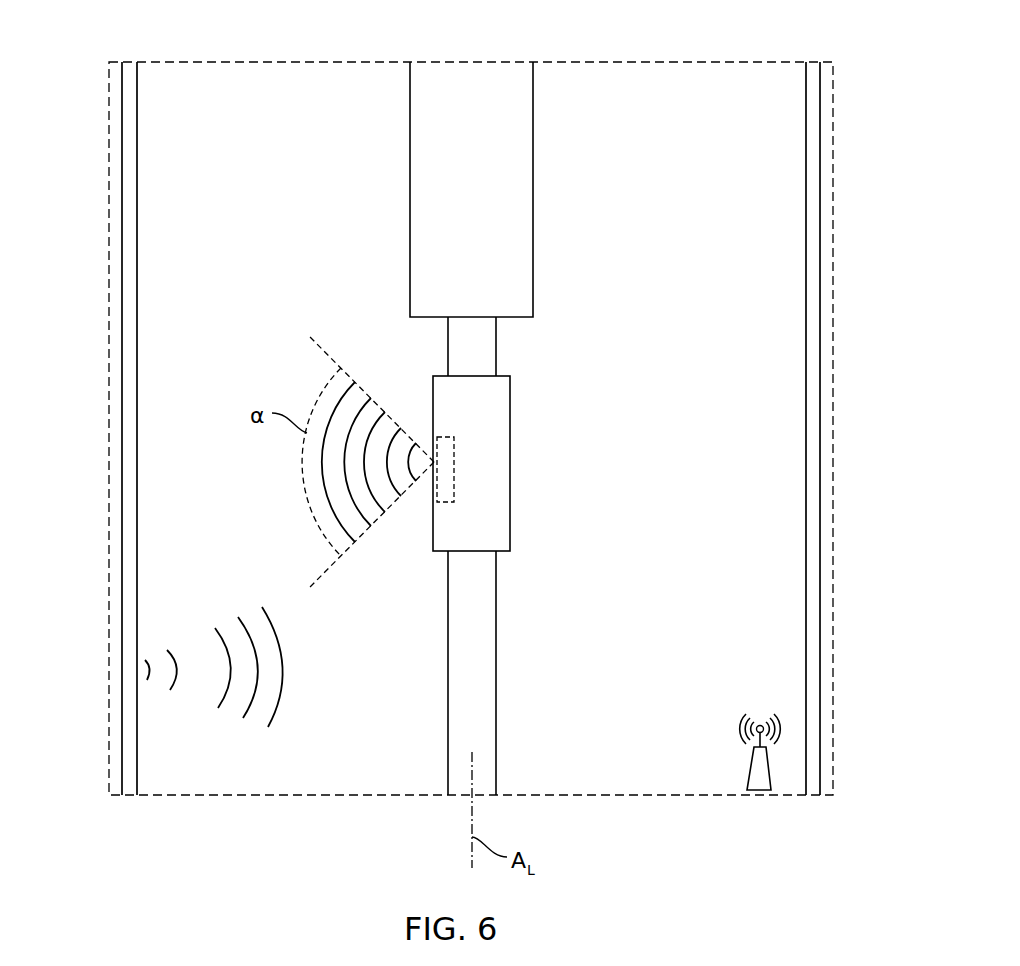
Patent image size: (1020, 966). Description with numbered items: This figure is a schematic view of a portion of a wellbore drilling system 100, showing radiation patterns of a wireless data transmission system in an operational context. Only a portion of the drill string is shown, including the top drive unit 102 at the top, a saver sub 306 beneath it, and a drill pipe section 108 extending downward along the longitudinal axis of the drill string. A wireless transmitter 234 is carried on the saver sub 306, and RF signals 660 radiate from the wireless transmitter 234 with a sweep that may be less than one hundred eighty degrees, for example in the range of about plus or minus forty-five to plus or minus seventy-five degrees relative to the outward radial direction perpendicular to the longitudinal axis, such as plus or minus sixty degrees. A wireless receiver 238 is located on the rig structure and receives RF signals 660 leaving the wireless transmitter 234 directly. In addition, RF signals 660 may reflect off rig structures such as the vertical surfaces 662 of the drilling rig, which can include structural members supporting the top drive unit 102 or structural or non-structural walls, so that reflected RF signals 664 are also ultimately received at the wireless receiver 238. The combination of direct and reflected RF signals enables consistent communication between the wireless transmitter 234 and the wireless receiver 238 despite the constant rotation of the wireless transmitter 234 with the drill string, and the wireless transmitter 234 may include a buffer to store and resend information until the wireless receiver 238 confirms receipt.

The wellbore drilling system 100 is at (562, 62).
The top drive unit 102 is at (518, 183).
The drill pipe section 108 is at (483, 659).
The wireless transmitter 234 is at (450, 440).
The wireless receiver 238 is at (752, 772).
The saver sub 306 is at (500, 453).
The RF signals 660 is at (342, 405).
The surfaces 662 is at (128, 409).
The reflected RF signals 664 is at (289, 668).